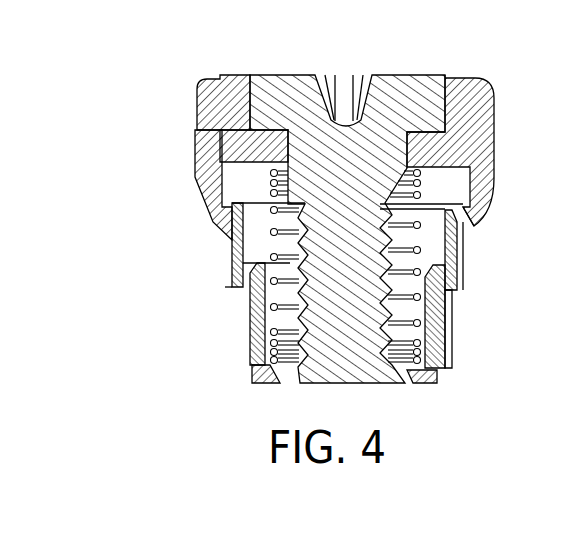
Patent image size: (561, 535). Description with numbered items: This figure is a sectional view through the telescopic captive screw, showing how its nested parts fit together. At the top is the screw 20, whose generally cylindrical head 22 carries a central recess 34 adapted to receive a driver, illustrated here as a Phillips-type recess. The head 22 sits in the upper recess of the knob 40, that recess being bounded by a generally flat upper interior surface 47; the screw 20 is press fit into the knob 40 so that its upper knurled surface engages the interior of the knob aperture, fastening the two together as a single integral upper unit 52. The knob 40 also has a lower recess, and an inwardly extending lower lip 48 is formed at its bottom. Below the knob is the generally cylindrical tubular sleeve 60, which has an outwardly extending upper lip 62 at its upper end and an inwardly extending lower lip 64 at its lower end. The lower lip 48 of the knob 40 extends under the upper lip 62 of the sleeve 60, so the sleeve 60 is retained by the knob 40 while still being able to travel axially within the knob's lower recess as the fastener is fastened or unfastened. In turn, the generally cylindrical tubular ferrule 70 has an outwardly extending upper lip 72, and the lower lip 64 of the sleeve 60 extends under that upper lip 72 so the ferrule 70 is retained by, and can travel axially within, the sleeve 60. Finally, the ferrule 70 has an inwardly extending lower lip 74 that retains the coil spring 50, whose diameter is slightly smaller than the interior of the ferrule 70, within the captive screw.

The screw 20 is at (197, 130).
The head 22 is at (496, 93).
The central recess 34 is at (333, 93).
The knob 40 is at (196, 157).
The upper interior surface 47 is at (452, 170).
The lower lip 48 is at (473, 227).
The spring 50 is at (330, 234).
The upper unit 52 is at (210, 110).
The sleeve 60 is at (232, 280).
The upper lip 62 is at (461, 226).
The lower lip 64 is at (452, 286).
The ferrule 70 is at (246, 322).
The upper lip 72 is at (440, 322).
The lower lip 74 is at (420, 383).